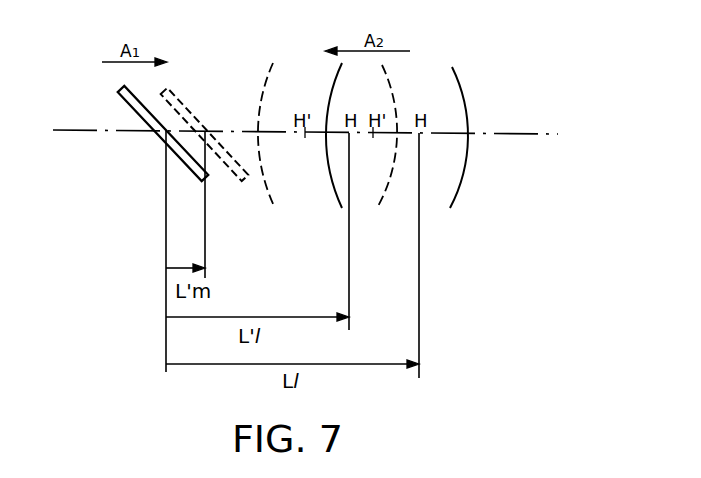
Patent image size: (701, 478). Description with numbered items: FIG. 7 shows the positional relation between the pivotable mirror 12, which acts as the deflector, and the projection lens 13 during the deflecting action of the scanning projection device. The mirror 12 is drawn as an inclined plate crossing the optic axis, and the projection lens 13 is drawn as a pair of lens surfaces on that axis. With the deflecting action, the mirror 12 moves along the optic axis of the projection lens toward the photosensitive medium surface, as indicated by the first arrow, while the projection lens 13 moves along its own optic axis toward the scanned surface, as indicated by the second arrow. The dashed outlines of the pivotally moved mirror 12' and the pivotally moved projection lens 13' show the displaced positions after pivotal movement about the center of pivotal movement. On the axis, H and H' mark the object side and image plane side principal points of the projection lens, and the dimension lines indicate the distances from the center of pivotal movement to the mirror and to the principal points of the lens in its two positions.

The pivotable mirror 12 is at (163, 152).
The pivotally moved mirror 12' is at (205, 153).
The projection lens 13 is at (403, 150).
The pivotally moved projection lens 13' is at (327, 150).